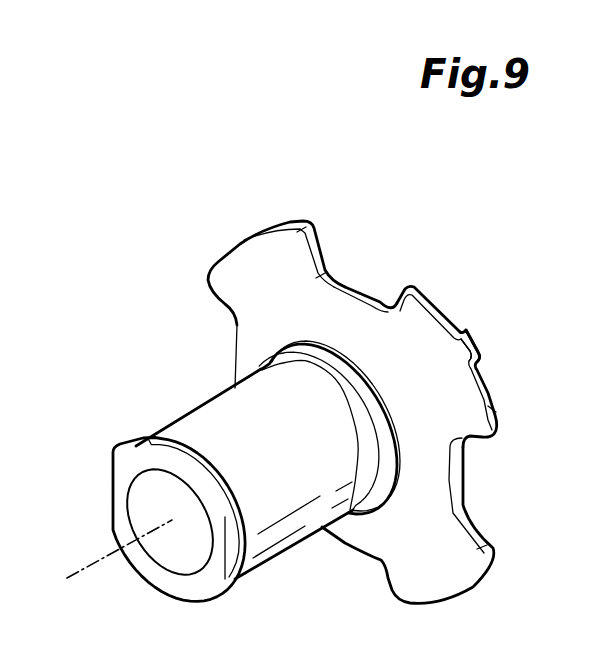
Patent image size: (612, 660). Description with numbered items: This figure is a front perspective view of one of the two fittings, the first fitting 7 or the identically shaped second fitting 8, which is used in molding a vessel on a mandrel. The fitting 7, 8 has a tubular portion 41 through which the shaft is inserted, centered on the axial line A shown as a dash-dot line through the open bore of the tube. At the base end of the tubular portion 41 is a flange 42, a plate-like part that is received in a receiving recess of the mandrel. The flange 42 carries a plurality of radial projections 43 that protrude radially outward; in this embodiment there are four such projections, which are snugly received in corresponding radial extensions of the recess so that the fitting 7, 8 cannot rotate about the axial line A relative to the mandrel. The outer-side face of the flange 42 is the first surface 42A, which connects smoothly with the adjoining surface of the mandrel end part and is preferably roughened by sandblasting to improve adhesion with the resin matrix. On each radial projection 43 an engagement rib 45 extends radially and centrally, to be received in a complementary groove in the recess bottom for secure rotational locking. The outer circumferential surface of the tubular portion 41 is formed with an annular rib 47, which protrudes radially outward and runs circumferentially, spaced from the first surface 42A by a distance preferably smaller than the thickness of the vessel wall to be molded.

The first fitting 7 is at (293, 378).
The second fitting 8 is at (293, 378).
The tubular portion 41 is at (212, 410).
The flange 42 is at (343, 378).
The first surface 42A is at (247, 322).
The radial projection 43 is at (386, 300).
The engagement rib 45 is at (468, 350).
The annular rib 47 is at (388, 447).
The axial line A is at (109, 560).